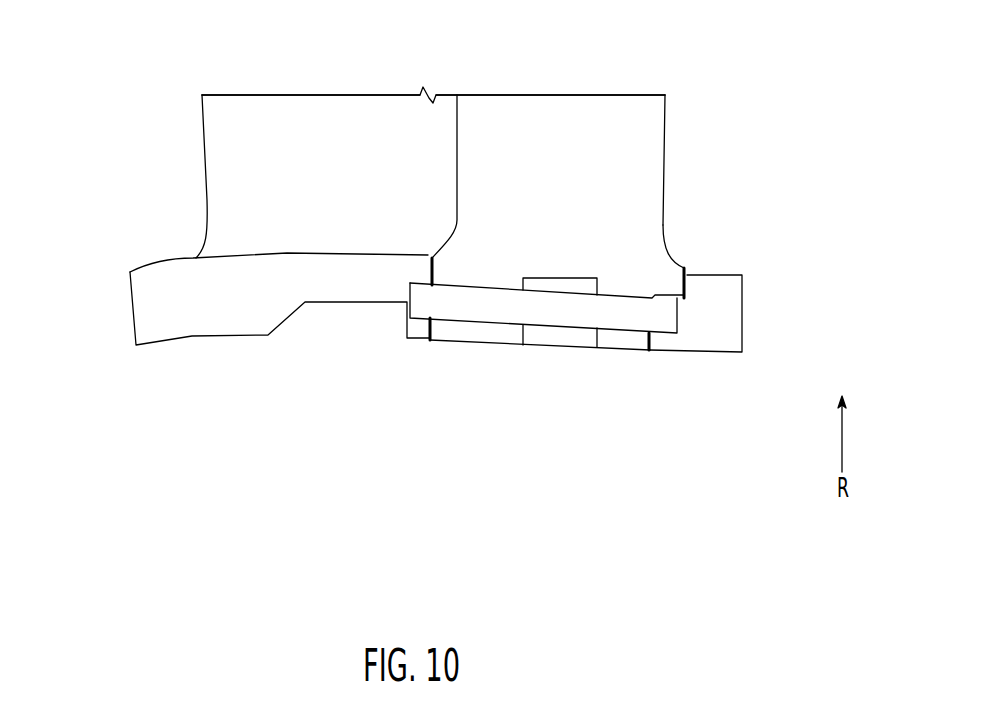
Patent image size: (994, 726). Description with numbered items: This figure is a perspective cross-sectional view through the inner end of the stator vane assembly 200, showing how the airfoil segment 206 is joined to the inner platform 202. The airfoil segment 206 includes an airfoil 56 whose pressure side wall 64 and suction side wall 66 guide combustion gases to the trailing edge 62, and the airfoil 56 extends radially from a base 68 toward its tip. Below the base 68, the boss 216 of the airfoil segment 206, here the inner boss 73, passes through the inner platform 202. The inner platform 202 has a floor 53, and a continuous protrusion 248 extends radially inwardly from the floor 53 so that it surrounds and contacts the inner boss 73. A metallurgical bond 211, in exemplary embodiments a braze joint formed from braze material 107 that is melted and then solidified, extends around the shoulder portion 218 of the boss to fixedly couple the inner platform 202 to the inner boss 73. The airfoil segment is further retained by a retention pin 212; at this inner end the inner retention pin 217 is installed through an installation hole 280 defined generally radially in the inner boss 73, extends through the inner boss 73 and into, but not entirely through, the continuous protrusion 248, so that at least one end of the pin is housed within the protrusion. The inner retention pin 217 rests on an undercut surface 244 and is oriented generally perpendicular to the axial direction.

The stator vane assembly 200 is at (667, 67).
The airfoil 56 is at (290, 104).
The pressure side wall 64 is at (368, 104).
The trailing edge 62 is at (203, 142).
The suction side wall 66 is at (668, 99).
The base 68 is at (680, 262).
The airfoil segment 206 is at (770, 158).
The shoulder portion 218 is at (668, 280).
The braze material 107 is at (668, 252).
The metallurgical bond 211 is at (430, 275).
The inner platform 202 is at (795, 272).
The floor 53 is at (327, 302).
The retention pin 212 is at (547, 403).
The inner retention pin 217 is at (578, 313).
The continuous protrusion 248 is at (410, 328).
The installation hole 280 is at (550, 327).
The boss 216 is at (476, 496).
The inner boss 73 is at (493, 380).
The undercut surface 244 is at (670, 346).